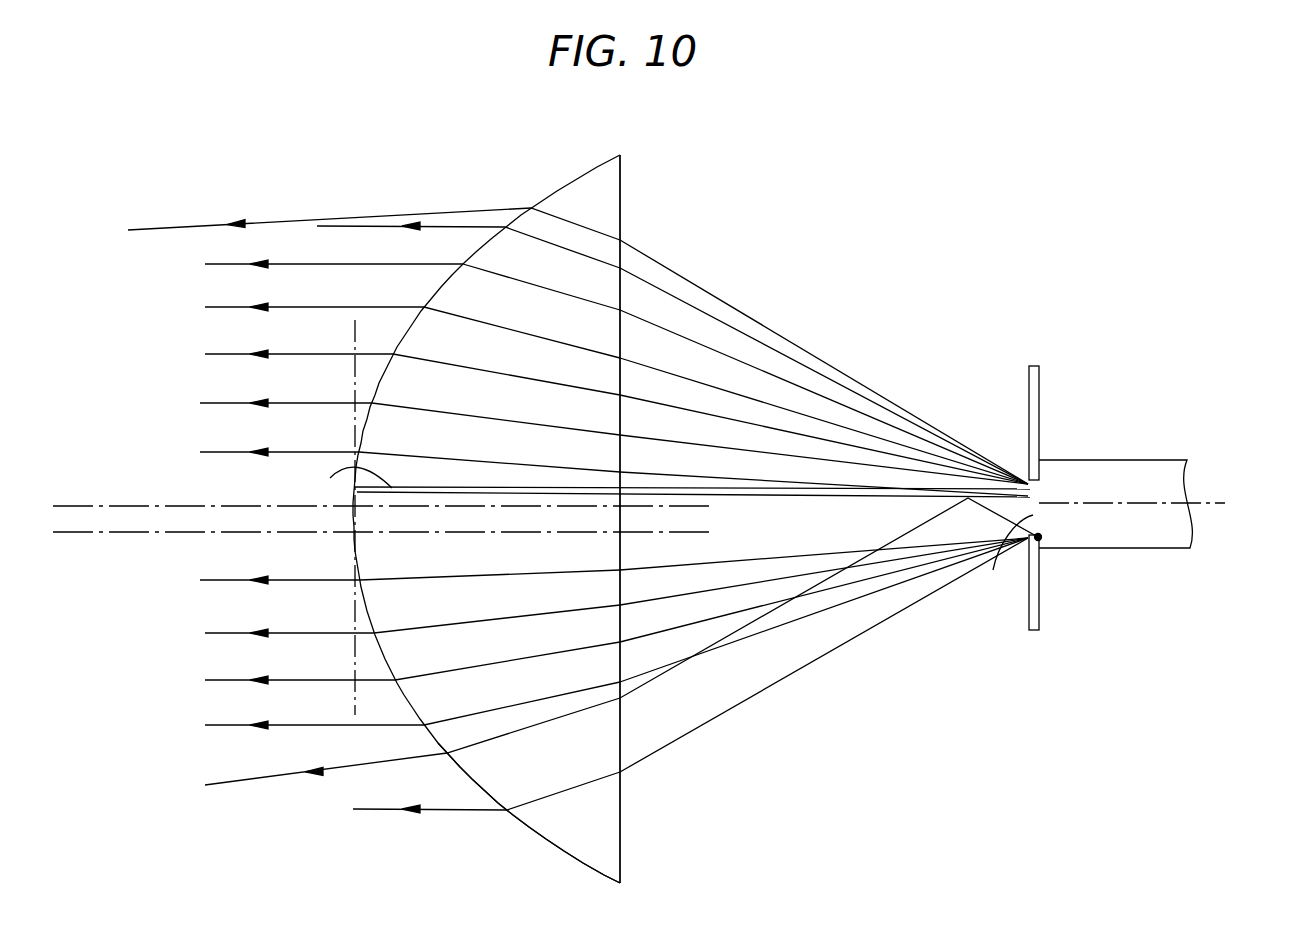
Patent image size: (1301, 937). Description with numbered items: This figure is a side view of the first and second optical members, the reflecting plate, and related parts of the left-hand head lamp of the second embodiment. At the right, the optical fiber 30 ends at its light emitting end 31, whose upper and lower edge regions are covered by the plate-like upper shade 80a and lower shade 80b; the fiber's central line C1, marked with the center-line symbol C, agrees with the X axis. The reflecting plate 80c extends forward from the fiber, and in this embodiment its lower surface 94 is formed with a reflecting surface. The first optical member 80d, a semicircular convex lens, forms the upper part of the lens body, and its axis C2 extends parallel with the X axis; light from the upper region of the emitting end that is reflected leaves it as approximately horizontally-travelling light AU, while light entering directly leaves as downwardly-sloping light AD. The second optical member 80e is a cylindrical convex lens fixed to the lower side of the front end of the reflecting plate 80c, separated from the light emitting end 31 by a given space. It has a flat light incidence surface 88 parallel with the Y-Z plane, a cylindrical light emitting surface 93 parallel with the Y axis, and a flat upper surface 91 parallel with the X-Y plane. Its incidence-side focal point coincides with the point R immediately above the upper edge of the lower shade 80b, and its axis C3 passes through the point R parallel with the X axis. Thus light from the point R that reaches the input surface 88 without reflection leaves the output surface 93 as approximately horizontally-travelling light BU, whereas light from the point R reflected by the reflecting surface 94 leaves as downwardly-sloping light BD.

The first optical member 80d is at (610, 205).
The second optical member 80e is at (606, 830).
The reflecting plate 80c is at (785, 494).
The upper shade 80a is at (1036, 392).
The lower shade 80b is at (1036, 615).
The light incidence surface 88 is at (621, 790).
The light emitting surface 93 is at (527, 828).
The upper surface 91 is at (353, 466).
The lower surface 94 is at (738, 494).
The optical fiber 30 is at (1100, 468).
The light emitting end 31 is at (993, 570).
The point R is at (1041, 538).
The central line C is at (1205, 505).
The central line of the optical fiber C1 is at (1205, 512).
The axis of the semicircular convex lens C2 is at (75, 504).
The axis of the cylindrical convex lens C3 is at (76, 534).
The downwardly-sloping light AD is at (270, 222).
The horizontally-travelling light AU is at (442, 226).
The downwardly-sloping light BD is at (328, 774).
The horizontally-travelling light BU is at (432, 811).